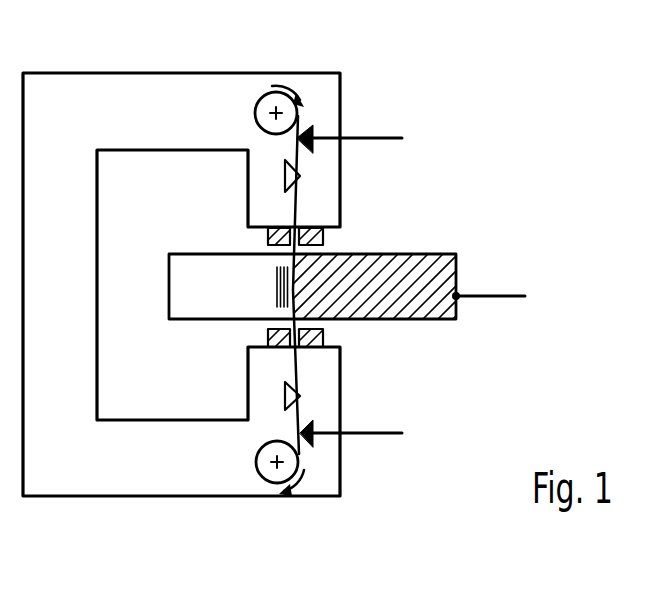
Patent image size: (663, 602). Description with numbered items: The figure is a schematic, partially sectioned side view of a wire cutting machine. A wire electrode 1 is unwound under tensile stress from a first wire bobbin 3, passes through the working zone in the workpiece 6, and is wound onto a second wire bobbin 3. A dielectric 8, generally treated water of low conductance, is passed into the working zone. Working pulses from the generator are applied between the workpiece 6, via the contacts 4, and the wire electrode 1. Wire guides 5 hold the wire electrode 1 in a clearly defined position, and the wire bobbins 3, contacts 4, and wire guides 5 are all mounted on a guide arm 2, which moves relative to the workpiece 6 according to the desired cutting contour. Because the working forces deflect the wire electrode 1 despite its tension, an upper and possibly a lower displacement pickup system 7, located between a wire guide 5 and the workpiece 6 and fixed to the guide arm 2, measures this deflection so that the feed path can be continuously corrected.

The wire electrode 1 is at (295, 211).
The guide arm 2 is at (178, 90).
The wire bobbin 3 is at (262, 97).
The contacts 4 is at (313, 128).
The wire guide 5 is at (300, 177).
The workpiece 6 is at (430, 257).
The displacement pickup system 7 is at (325, 237).
The dielectric 8 is at (278, 282).